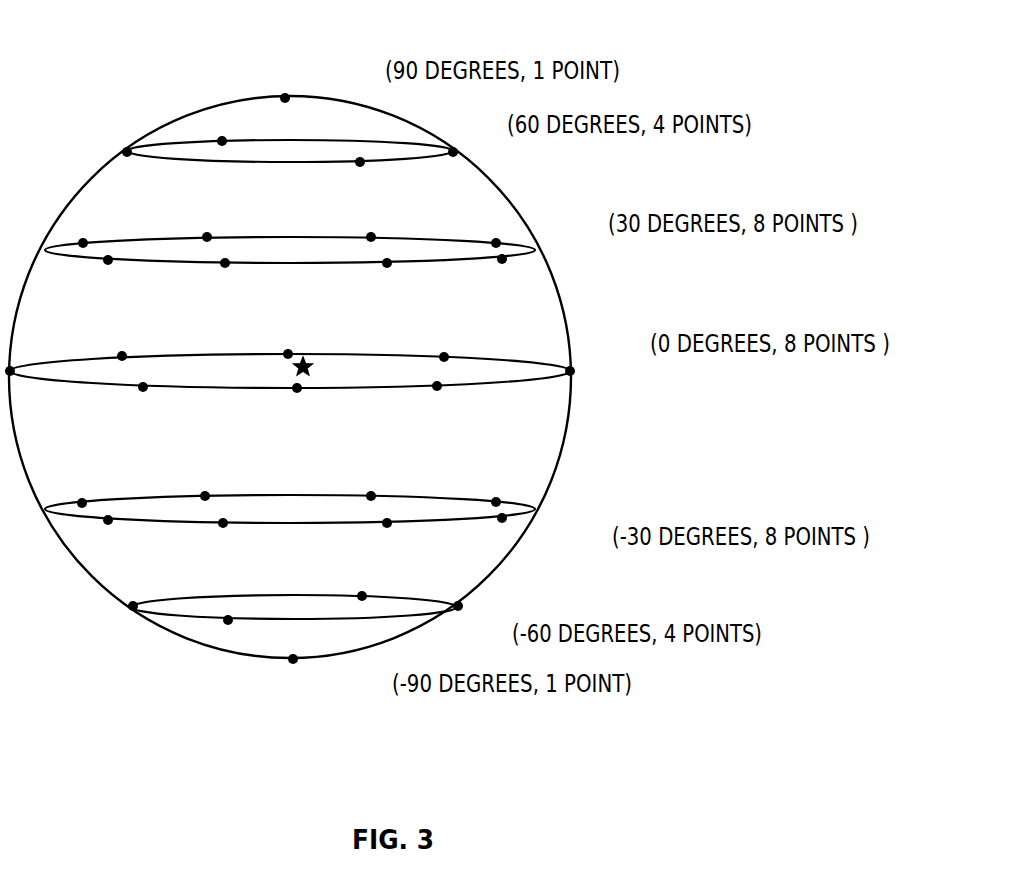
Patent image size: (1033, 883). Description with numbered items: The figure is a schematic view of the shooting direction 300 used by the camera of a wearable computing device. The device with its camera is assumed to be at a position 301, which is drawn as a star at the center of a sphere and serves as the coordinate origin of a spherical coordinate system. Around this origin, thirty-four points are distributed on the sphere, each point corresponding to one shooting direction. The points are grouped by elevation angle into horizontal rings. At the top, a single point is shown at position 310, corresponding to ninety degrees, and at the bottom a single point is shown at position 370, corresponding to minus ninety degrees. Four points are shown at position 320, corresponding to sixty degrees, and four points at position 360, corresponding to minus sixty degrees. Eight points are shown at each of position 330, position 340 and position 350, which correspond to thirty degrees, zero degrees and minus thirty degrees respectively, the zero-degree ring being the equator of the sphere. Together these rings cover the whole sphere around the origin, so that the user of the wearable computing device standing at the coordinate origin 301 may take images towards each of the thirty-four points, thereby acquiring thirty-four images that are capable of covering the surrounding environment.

The shooting direction 300 is at (143, 44).
The position 301 is at (302, 360).
The position at 90 degrees 310 is at (286, 97).
The position at 60 degrees 320 is at (410, 143).
The position at 30 degrees 330 is at (517, 242).
The position at 0 degrees 340 is at (543, 362).
The position at -30 degrees 350 is at (510, 518).
The position at -60 degrees 360 is at (420, 617).
The position at -90 degrees 370 is at (293, 660).